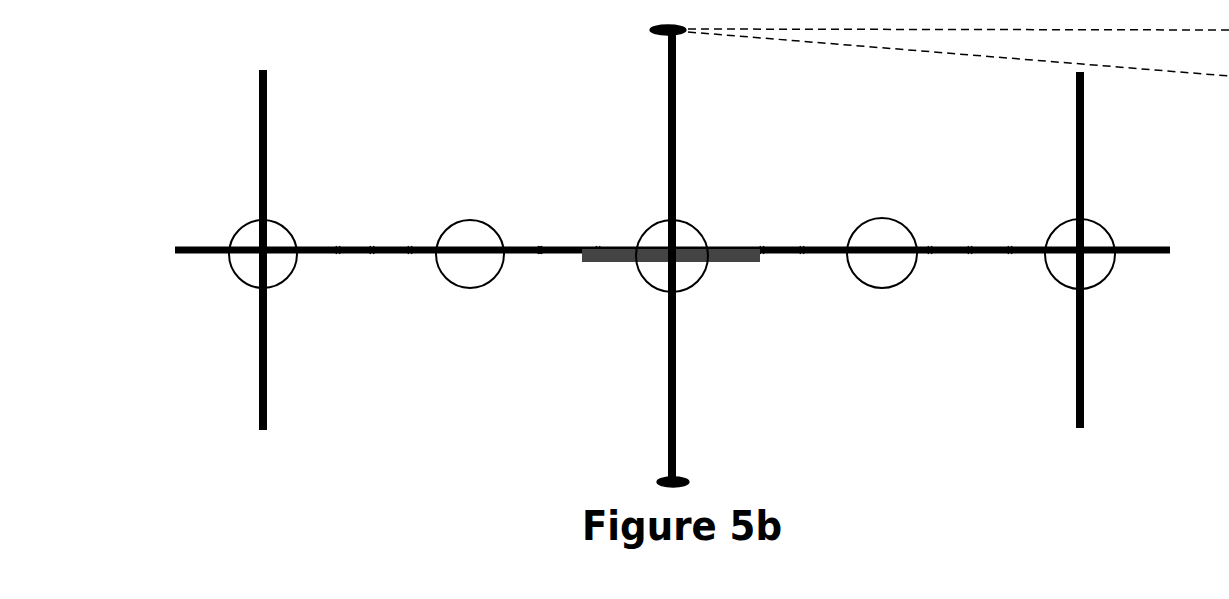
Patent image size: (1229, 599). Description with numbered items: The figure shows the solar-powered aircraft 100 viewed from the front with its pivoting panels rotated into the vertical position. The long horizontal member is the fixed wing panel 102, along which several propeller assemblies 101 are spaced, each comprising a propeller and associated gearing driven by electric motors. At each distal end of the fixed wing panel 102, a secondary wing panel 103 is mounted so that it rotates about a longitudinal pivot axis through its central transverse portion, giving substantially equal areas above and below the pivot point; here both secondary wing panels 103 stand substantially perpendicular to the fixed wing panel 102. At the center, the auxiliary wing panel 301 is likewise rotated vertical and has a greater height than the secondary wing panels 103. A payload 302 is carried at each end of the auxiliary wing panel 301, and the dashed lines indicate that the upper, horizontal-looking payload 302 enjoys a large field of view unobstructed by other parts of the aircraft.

The solar-powered aircraft 100 is at (203, 93).
The propeller assembly 101 is at (460, 291).
The fixed wing panel 102 is at (378, 257).
The secondary wing panel 103 is at (262, 432).
The auxiliary wing panel 301 is at (667, 154).
The payload 302 is at (655, 34).